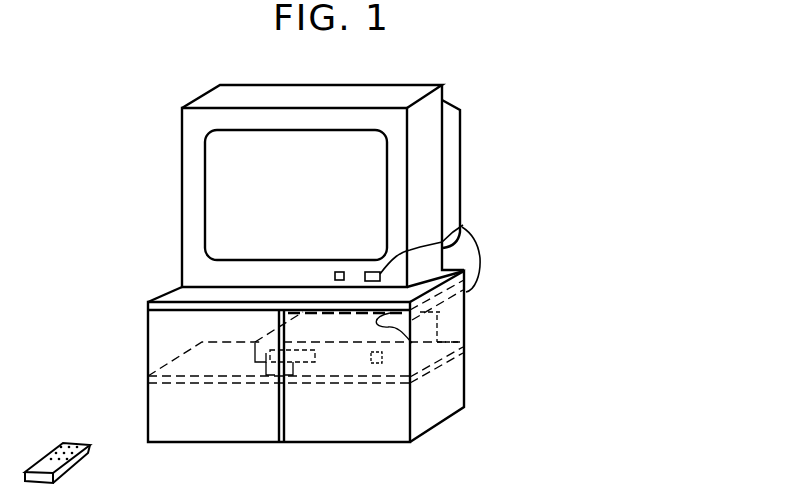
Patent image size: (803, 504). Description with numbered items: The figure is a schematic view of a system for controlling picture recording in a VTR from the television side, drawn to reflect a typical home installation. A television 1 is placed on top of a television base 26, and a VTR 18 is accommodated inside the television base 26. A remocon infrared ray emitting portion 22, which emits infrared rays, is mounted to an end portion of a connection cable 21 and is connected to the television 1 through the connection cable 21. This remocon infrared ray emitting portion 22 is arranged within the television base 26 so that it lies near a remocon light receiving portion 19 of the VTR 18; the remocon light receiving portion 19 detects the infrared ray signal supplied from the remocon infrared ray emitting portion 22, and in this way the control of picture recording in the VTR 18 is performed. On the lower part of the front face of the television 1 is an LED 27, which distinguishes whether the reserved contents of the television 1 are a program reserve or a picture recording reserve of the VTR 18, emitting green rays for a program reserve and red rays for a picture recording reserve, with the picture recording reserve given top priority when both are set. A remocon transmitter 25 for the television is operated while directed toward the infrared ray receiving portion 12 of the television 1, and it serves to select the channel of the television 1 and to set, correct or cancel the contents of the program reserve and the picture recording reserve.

The television 1 is at (325, 83).
The infrared ray receiving portion 12 is at (463, 225).
The VTR 18 is at (333, 345).
The remocon light receiving portion 19 is at (372, 373).
The connection cable 21 is at (483, 246).
The remocon infrared ray emitting portion 22 is at (444, 363).
The remocon transmitter for TV 25 is at (53, 447).
The television base 26 is at (147, 337).
The LED 27 is at (339, 271).